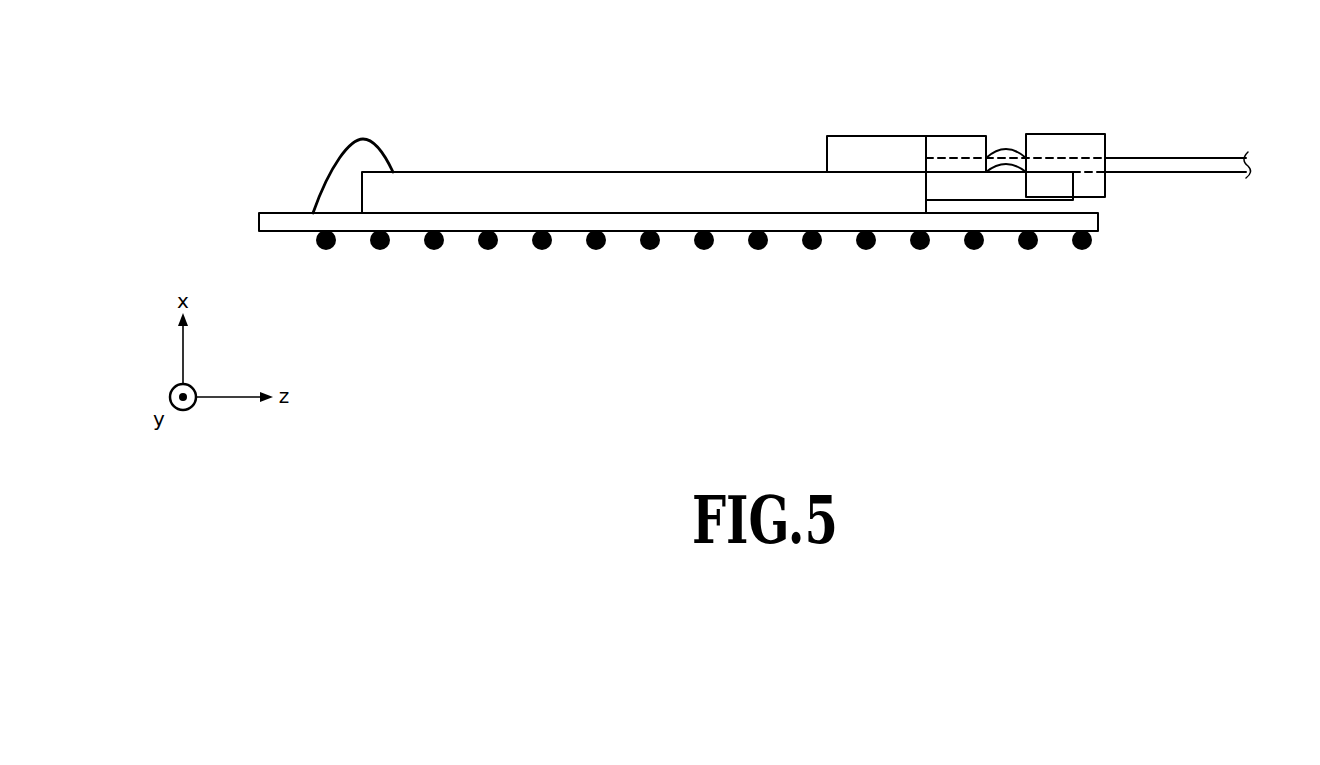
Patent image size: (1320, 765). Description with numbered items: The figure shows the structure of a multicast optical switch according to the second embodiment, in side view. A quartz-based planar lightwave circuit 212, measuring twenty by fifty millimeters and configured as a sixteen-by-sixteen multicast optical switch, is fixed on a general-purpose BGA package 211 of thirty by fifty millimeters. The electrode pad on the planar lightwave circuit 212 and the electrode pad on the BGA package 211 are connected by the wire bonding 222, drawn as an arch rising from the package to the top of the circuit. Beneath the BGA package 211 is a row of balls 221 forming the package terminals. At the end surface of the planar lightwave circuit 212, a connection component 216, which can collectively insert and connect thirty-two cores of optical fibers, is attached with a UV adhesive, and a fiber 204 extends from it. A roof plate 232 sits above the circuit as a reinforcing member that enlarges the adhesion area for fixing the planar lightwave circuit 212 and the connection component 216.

The cable 204 is at (1177, 163).
The BGA package 211 is at (258, 208).
The planar lightwave circuit 212 is at (620, 170).
The connection component 216 is at (1105, 123).
The solder ball 221 is at (322, 250).
The wire bonding 222 is at (367, 132).
The roof plate 232 is at (853, 145).